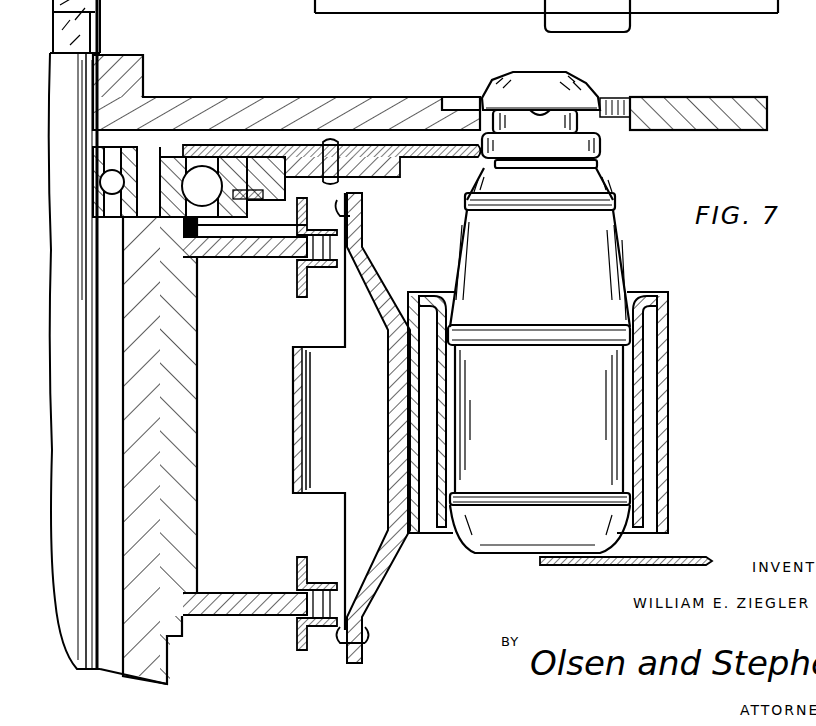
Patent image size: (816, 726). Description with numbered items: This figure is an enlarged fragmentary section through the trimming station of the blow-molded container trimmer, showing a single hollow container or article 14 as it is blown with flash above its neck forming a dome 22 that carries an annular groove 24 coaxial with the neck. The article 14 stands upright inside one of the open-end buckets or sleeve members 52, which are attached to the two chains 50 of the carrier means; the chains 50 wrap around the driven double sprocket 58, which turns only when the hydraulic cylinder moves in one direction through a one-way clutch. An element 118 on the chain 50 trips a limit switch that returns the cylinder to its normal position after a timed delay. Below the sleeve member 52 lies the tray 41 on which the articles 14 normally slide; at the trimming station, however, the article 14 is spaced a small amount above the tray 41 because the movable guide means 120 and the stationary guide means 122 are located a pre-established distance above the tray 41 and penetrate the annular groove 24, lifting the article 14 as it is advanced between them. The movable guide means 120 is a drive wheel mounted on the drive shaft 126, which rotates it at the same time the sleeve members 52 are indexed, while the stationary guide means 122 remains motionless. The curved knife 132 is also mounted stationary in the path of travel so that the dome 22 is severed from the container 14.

The hollow containers or articles 14 is at (622, 262).
The dome 22 is at (585, 86).
The annular groove 24 is at (540, 110).
The tray 41 is at (668, 558).
The chains 50 is at (297, 264).
The buckets or sleeve members 52 is at (670, 388).
The driven double sprocket 58 is at (198, 424).
The element on chain 118 is at (292, 384).
The movable guide means 120 is at (412, 96).
The stationary guide means 122 is at (682, 97).
The drive shaft 126 is at (100, 543).
The curved knife 132 is at (462, 158).